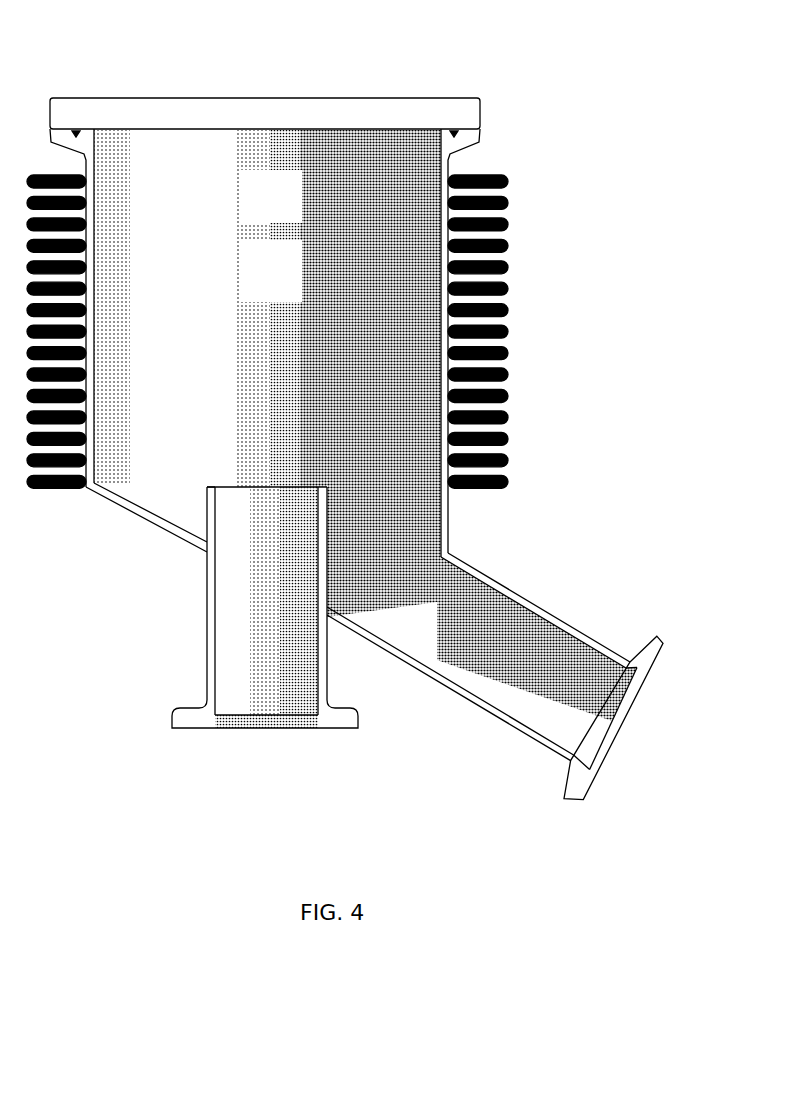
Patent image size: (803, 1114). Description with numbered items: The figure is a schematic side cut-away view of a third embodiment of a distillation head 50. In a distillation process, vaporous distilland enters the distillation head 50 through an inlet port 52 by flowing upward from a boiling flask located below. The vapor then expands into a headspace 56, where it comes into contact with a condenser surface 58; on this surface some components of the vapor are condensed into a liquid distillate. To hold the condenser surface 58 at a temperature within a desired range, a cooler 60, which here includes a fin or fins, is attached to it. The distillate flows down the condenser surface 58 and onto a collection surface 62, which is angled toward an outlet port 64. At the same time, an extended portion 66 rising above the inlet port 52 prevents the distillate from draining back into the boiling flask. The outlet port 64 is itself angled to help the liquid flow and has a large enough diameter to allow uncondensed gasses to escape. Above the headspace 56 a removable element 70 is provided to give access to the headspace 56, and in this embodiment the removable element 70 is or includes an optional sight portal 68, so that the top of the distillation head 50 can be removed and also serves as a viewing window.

The distillation head 50 is at (640, 45).
The inlet port 52 is at (190, 607).
The headspace 56 is at (277, 283).
The condenser surface 58 is at (95, 212).
The cooler 60 is at (337, 331).
The collection surface 62 is at (153, 525).
The outlet port 64 is at (656, 752).
The extended portion 66 is at (205, 487).
The sight portal 68 is at (381, 125).
The removable element 70 is at (483, 113).